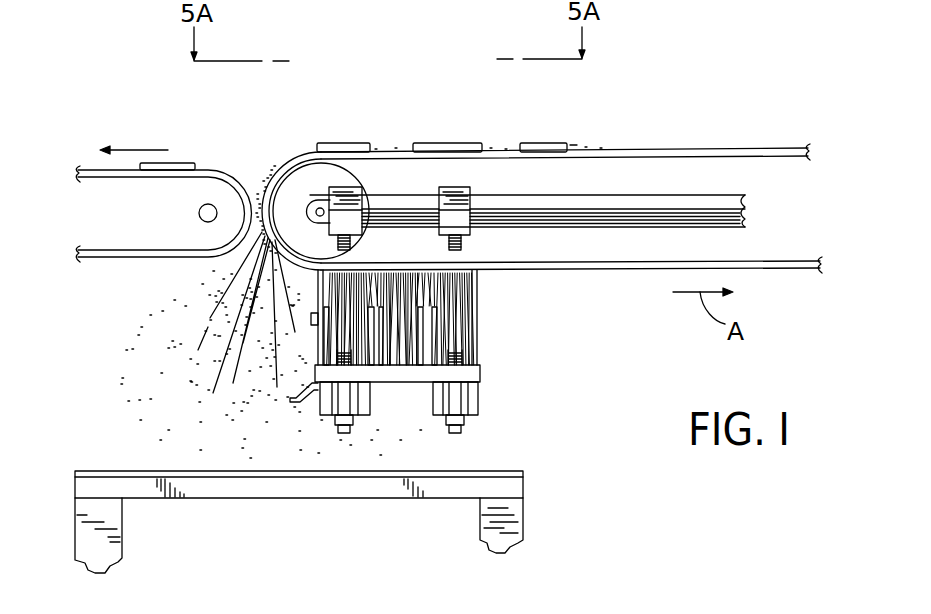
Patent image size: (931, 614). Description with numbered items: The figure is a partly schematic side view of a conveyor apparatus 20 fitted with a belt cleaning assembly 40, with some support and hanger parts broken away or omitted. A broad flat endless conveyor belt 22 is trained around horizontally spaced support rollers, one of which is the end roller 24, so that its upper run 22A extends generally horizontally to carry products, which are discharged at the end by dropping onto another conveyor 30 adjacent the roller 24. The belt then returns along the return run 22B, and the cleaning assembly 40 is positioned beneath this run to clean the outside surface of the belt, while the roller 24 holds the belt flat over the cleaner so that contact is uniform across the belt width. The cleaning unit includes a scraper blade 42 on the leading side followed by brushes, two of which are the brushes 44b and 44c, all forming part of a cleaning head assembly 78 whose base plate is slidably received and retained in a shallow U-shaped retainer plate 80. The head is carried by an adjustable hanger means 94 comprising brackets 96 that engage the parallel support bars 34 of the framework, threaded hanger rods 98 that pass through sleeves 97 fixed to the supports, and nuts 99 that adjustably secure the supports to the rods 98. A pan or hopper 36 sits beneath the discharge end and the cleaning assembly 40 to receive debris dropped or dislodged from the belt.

The conveyor apparatus 20 is at (553, 305).
The conveyor belt 22 is at (569, 208).
The upper run of the belt 22A is at (783, 149).
The return run of the belt 22B is at (770, 270).
The support roller 24 is at (275, 152).
The another conveyor 30 is at (93, 168).
The support bars 34 is at (745, 223).
The pan or hopper 36 is at (524, 488).
The cleaning assembly 40 is at (386, 369).
The scraper blade 42 is at (318, 293).
The brush 44b is at (391, 382).
The brush 44c is at (477, 324).
The cleaning head assembly 78 is at (482, 346).
The retainer plate 80 is at (483, 383).
The hanger means 94 is at (489, 414).
The brackets 96 is at (347, 195).
The sleeves 97 is at (481, 400).
The threaded hanger rods 98 is at (350, 248).
The nuts 99 is at (466, 422).